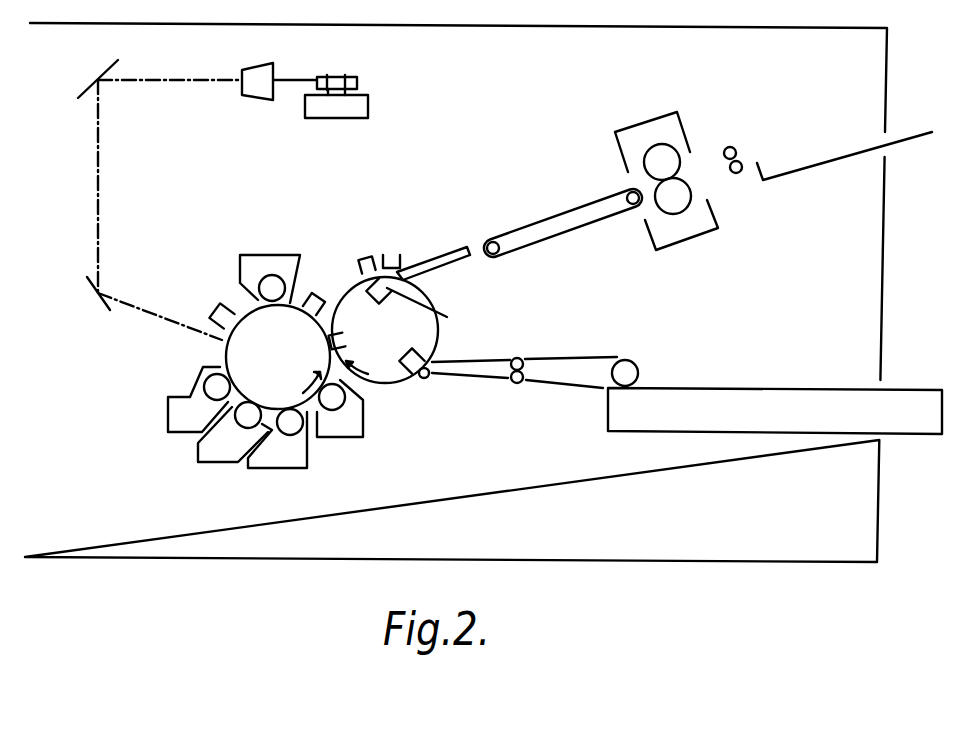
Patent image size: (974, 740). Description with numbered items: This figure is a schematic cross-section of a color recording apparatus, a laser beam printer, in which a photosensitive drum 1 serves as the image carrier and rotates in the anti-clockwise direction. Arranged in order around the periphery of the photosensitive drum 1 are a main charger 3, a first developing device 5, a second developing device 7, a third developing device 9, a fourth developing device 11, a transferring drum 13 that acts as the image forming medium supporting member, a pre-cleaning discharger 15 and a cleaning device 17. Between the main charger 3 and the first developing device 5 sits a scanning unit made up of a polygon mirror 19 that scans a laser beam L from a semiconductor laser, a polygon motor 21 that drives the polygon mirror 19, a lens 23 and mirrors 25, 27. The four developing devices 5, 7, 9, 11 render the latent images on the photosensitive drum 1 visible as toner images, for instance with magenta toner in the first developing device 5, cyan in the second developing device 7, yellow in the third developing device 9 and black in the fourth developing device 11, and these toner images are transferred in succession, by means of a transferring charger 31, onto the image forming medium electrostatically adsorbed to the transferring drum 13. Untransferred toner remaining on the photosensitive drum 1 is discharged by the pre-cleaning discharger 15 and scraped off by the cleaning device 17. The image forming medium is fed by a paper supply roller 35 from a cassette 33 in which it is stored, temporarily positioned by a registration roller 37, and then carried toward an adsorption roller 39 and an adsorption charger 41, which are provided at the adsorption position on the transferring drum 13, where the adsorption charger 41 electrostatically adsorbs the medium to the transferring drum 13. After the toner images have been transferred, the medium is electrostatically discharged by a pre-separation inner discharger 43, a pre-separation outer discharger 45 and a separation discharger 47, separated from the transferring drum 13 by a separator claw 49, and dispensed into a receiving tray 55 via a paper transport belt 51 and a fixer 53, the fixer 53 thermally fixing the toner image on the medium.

The photosensitive drum 1 is at (228, 343).
The main charger 3 is at (227, 297).
The first developing device 5 is at (167, 407).
The second developing device 7 is at (202, 466).
The third developing device 9 is at (273, 470).
The fourth developing device 11 is at (323, 438).
The transferring drum 13 is at (388, 382).
The pre-cleaning discharger 15 is at (300, 305).
The cleaning device 17 is at (263, 268).
The polygon mirror 19 is at (352, 75).
The polygon motor 21 is at (310, 118).
The lens 23 is at (255, 100).
The mirror 25 is at (92, 82).
The mirror 27 is at (92, 292).
The transferring charger 31 is at (332, 333).
The cassette 33 is at (775, 390).
The paper supply roller 35 is at (628, 362).
The registration roller 37 is at (513, 382).
The adsorption roller 39 is at (428, 377).
The adsorption charger 41 is at (417, 375).
The pre-separation inner discharger 43 is at (430, 310).
The pre-separation outer discharger 45 is at (363, 258).
The separation discharger 47 is at (420, 238).
The separator claw 49 is at (435, 268).
The paper transport belt 51 is at (585, 205).
The fixer 53 is at (622, 130).
The receiving tray 55 is at (905, 132).
The laser beam L is at (160, 316).